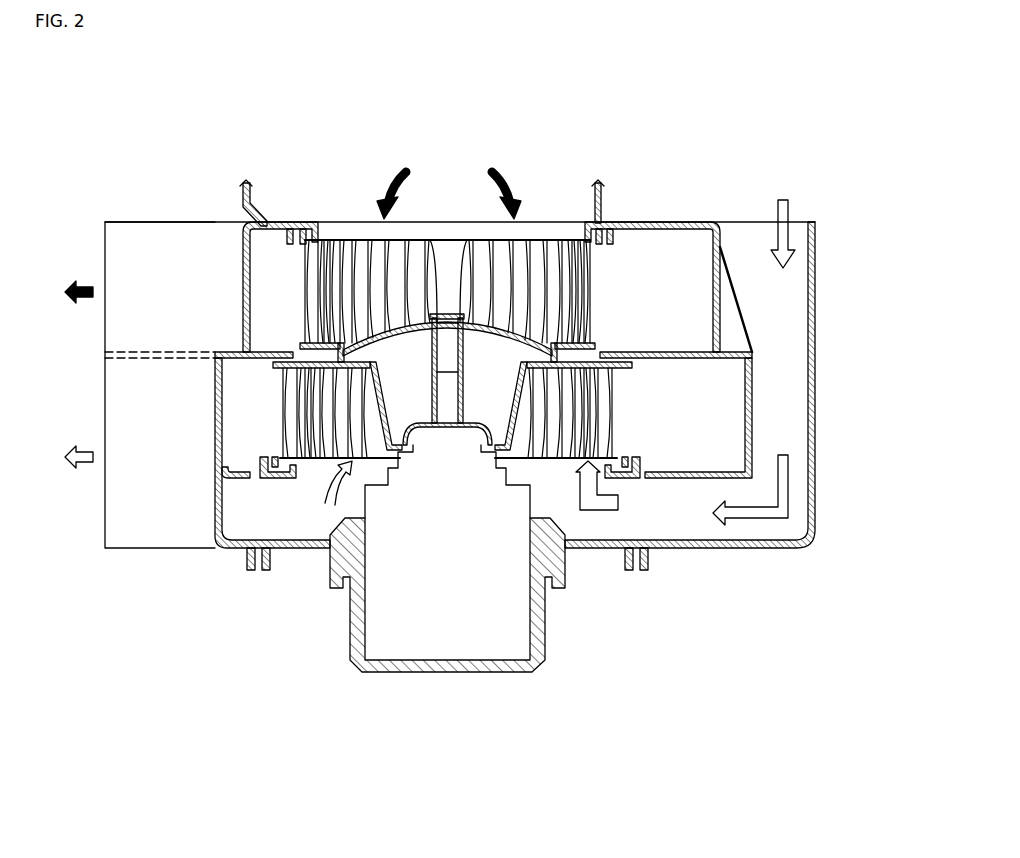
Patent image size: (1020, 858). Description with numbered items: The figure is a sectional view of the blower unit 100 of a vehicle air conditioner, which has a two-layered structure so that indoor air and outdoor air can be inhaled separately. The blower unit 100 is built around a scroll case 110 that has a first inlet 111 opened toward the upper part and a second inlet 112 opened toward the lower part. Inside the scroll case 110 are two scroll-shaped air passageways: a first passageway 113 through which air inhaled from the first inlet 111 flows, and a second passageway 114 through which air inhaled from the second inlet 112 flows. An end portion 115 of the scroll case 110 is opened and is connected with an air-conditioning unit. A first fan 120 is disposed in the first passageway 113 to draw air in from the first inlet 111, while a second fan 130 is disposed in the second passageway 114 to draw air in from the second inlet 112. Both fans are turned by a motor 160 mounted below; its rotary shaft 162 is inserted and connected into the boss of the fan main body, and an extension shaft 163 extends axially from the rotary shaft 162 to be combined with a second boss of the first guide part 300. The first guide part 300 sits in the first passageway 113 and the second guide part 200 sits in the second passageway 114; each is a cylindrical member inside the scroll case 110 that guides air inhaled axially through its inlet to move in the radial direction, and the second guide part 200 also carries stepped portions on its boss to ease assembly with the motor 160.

The blower unit 100 is at (692, 158).
The scroll case 110 is at (745, 310).
The first inlet 111 is at (452, 236).
The second inlet 112 is at (593, 548).
The first passageway 113 is at (680, 286).
The second passageway 114 is at (693, 440).
The end portion 115 is at (105, 243).
The first fan 120 is at (600, 286).
The second fan 130 is at (523, 413).
The motor 160 is at (473, 640).
The rotary shaft 162 is at (457, 399).
The extension shaft 163 is at (437, 361).
The second guide part 200 is at (632, 410).
The first guide part 300 is at (380, 327).